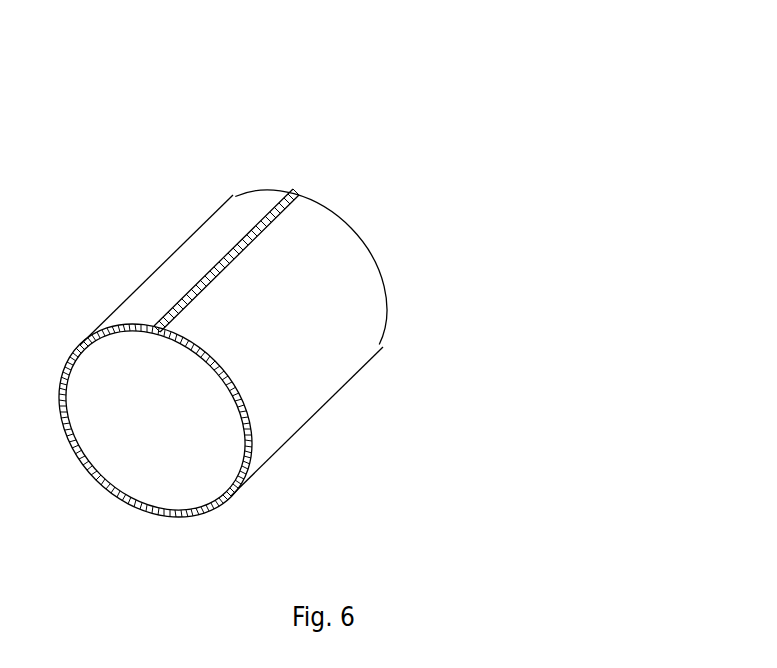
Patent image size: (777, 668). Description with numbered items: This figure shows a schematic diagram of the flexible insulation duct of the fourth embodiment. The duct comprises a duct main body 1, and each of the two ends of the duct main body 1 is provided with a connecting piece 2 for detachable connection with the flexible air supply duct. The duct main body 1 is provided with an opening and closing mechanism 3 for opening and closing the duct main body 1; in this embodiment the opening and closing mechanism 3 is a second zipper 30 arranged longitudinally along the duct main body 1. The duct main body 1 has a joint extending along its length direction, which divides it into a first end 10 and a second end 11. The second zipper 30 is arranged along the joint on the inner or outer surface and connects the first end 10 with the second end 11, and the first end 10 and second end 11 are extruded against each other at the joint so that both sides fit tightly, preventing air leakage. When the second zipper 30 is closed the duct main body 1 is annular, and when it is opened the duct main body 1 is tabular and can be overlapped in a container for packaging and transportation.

The duct main body 1 is at (408, 295).
The connecting piece 2 is at (198, 515).
The opening and closing mechanism 3 is at (258, 181).
The first end 10 is at (233, 240).
The second end 11 is at (298, 215).
The second zipper 30 is at (293, 196).